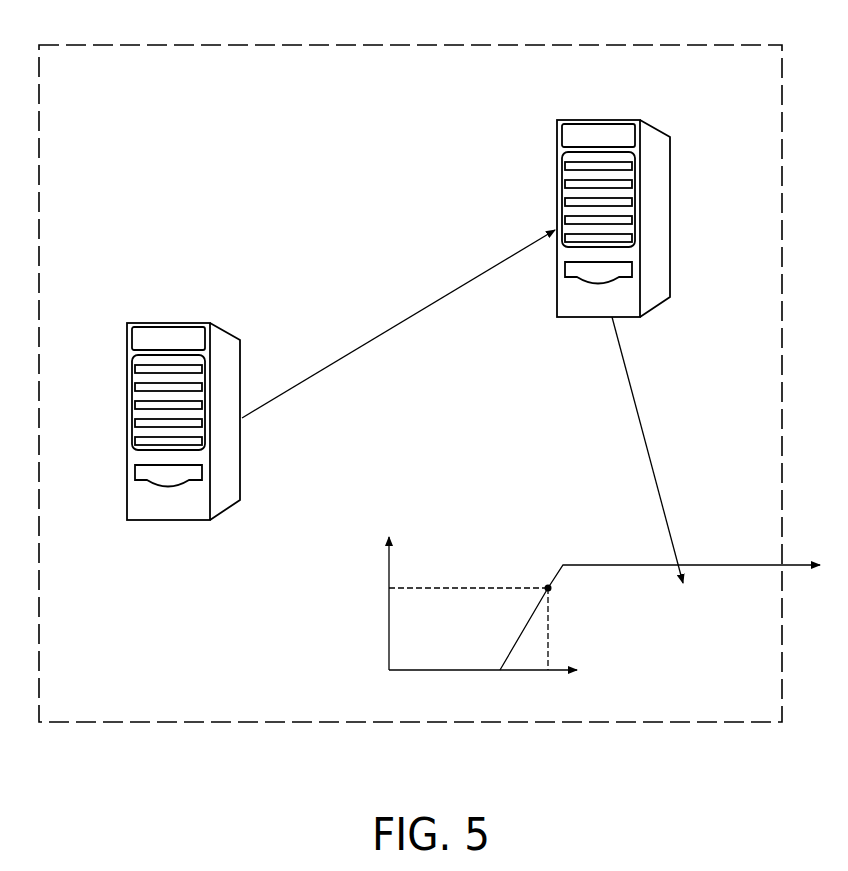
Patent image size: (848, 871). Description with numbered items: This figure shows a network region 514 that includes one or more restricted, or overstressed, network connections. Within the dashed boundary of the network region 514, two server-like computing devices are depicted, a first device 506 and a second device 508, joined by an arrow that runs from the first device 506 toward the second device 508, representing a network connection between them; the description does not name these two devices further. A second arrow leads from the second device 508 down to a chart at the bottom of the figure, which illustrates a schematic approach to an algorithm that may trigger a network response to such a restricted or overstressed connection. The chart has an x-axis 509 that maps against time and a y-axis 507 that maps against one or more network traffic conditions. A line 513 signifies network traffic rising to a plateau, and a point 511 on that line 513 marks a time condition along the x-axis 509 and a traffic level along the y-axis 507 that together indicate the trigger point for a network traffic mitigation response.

The first server / computing device 506 is at (176, 323).
The y-axis 507 is at (389, 632).
The second server / computing device 508 is at (604, 120).
The x-axis 509 is at (450, 670).
The point 511 is at (545, 588).
The line 513 is at (519, 638).
The network region 514 is at (503, 45).